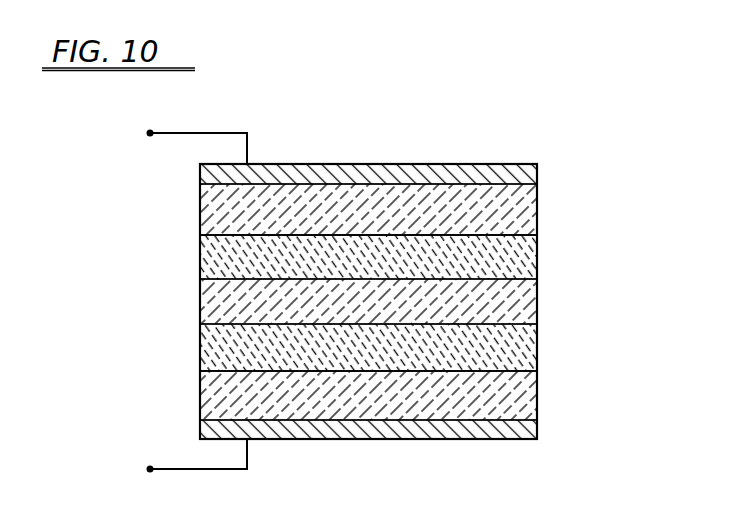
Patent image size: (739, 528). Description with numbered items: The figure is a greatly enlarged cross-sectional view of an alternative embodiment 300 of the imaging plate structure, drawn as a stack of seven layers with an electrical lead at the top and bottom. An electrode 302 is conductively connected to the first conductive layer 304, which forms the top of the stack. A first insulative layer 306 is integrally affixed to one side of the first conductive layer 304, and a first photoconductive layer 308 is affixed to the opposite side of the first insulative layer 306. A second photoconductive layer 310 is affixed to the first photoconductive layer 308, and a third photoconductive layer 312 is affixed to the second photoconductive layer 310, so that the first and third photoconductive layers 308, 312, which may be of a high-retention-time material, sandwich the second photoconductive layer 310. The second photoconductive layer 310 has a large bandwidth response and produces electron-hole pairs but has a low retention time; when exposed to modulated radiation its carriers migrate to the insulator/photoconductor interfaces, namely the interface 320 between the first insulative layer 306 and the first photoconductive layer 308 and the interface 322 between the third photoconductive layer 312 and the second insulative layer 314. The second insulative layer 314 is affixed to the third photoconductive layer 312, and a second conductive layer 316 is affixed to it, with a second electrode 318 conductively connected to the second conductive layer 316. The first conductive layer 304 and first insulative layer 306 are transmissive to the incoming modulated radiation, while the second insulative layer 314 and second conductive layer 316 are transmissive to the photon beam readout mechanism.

The imaging plate structure embodiment 300 is at (430, 288).
The electrode 302 is at (251, 128).
The first conductive layer 304 is at (544, 174).
The first insulative layer 306 is at (542, 211).
The first photoconductive layer 308 is at (542, 260).
The second photoconductive layer 310 is at (536, 302).
The third photoconductive layer 312 is at (537, 347).
The second insulative layer 314 is at (528, 397).
The second conductive layer 316 is at (545, 436).
The second electrode 318 is at (247, 478).
The interface 320 is at (544, 236).
The interface 322 is at (555, 372).